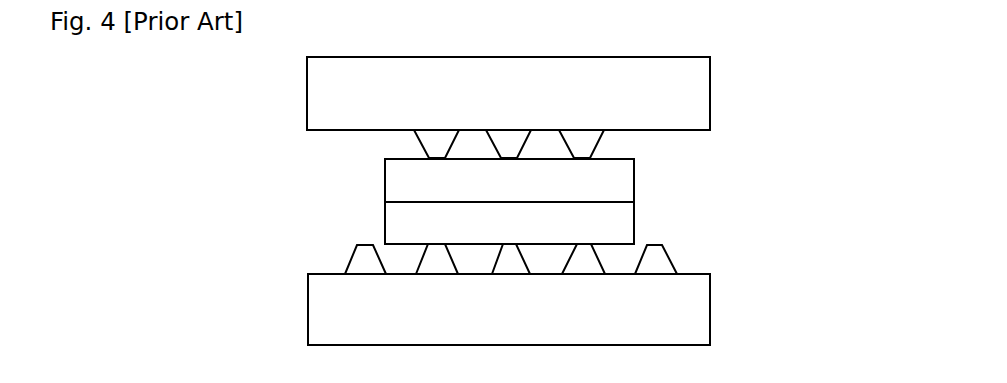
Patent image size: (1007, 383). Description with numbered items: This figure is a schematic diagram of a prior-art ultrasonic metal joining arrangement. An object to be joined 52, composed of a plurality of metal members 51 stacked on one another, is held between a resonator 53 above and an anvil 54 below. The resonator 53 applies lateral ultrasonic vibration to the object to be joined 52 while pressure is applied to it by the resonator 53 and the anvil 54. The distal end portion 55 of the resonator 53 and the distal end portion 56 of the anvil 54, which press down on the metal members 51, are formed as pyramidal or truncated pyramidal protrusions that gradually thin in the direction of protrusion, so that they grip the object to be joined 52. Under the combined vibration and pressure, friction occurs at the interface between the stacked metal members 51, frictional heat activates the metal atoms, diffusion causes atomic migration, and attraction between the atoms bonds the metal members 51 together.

The metal members 51 is at (620, 186).
The object to be joined 52 is at (385, 187).
The resonator 53 is at (702, 78).
The anvil 54 is at (702, 313).
The distal end portion of the resonator 55 is at (587, 144).
The distal end portion of the anvil 56 is at (363, 262).